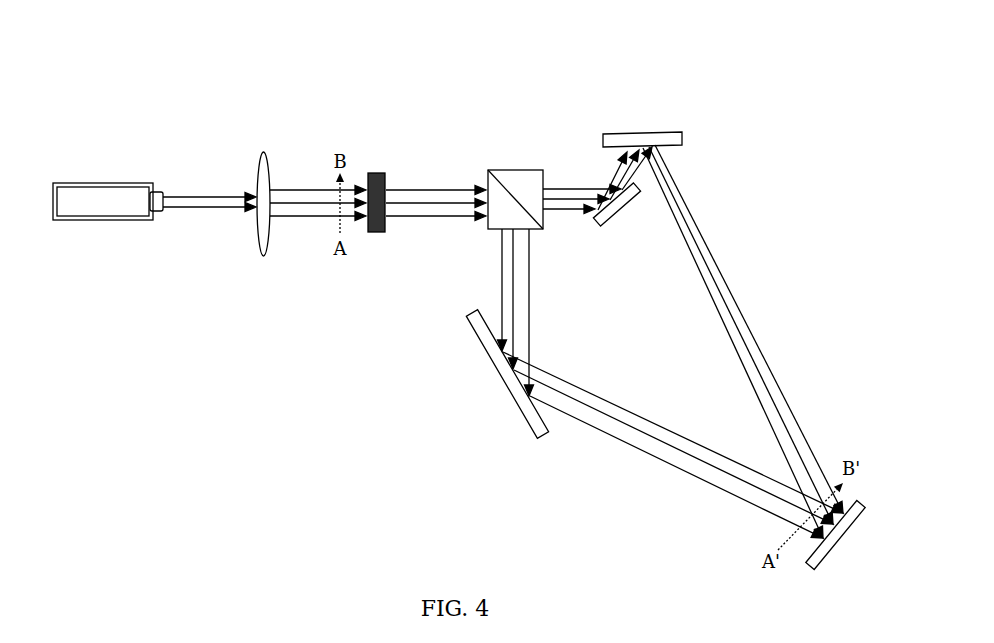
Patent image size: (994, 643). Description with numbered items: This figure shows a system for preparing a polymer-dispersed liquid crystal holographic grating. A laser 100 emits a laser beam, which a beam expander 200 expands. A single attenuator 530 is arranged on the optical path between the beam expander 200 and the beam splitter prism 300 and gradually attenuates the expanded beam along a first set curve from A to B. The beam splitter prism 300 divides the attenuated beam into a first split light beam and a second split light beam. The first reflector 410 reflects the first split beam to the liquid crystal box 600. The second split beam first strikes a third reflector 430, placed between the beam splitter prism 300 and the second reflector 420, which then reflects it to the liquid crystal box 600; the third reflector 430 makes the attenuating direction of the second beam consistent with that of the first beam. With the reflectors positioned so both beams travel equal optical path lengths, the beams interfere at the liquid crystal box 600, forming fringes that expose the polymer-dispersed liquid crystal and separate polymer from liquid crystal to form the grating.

The laser 100 is at (92, 244).
The beam expander 200 is at (224, 242).
The attenuator 530 is at (336, 250).
The beam splitter prism 300 is at (476, 241).
The third reflector 430 is at (590, 239).
The second reflector 420 is at (665, 82).
The first reflector 410 is at (483, 397).
The liquid crystal box 600 is at (870, 484).